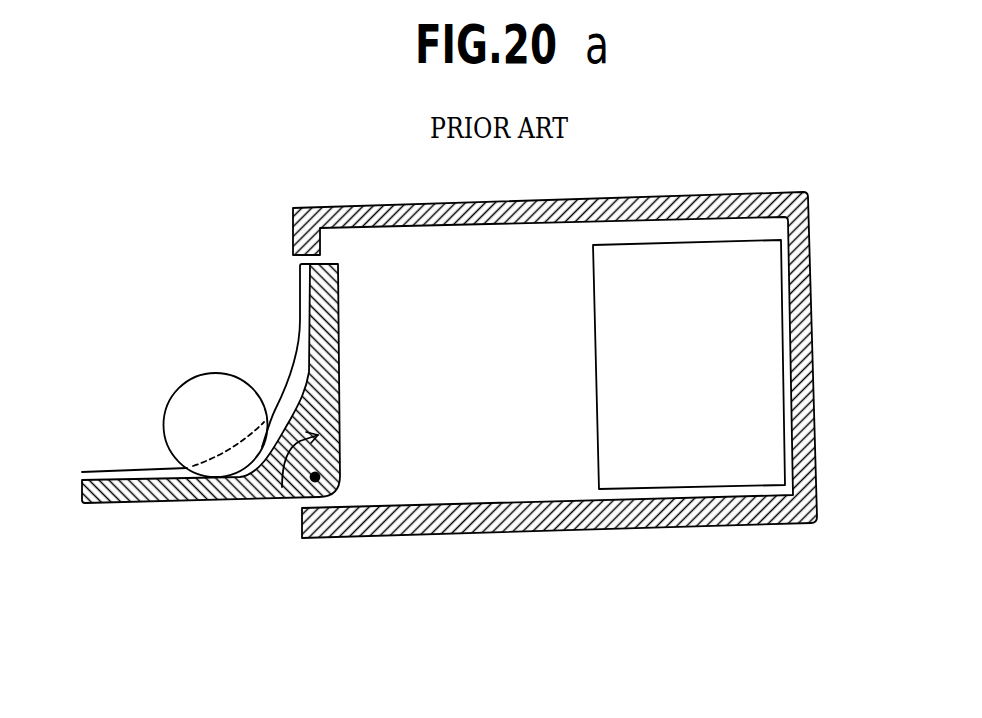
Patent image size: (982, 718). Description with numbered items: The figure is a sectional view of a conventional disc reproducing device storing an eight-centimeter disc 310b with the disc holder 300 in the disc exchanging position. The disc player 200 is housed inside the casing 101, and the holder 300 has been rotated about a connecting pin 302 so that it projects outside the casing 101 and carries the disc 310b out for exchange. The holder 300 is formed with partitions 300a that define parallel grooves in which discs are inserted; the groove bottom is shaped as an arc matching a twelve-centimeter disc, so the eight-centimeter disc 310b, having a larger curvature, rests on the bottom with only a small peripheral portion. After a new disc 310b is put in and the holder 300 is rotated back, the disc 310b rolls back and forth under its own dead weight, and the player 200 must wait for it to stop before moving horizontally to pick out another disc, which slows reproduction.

The casing 101 is at (741, 196).
The disc player 200 is at (762, 360).
The disc holder 300 is at (108, 503).
The partition 300a is at (291, 389).
The connecting pin 302 is at (312, 481).
The eight-centimeter disc 310b is at (212, 378).